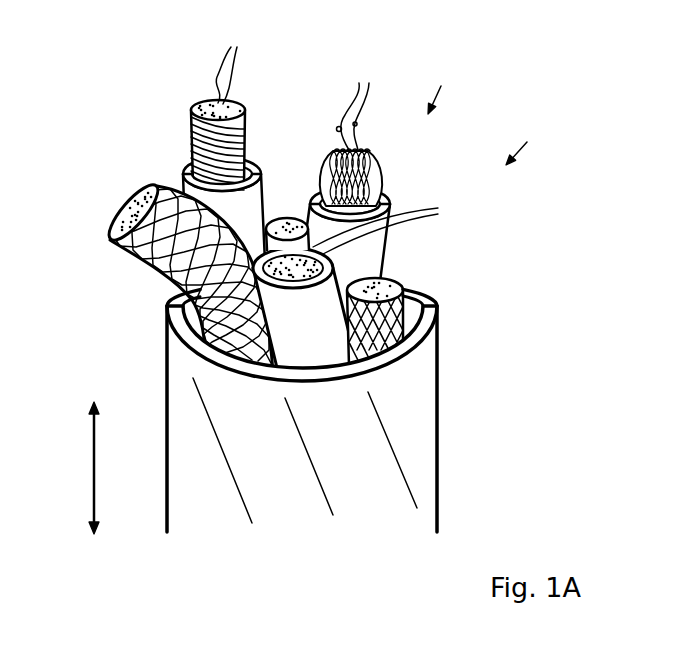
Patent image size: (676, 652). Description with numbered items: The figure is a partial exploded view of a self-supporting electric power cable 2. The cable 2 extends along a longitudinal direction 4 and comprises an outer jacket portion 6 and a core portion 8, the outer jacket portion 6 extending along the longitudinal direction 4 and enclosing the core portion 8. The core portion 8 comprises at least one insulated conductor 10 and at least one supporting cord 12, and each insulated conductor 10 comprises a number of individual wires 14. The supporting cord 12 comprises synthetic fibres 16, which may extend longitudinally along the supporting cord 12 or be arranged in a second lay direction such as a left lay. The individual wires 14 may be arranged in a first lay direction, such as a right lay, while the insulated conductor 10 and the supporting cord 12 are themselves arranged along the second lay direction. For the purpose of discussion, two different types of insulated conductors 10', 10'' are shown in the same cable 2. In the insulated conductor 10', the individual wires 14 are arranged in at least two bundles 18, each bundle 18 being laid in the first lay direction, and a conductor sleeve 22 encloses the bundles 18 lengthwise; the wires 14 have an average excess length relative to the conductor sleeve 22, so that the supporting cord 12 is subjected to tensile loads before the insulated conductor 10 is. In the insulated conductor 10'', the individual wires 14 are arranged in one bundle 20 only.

The self-supporting electric power cable 2 is at (523, 141).
The longitudinal direction 4 is at (93, 476).
The outer jacket portion 6 is at (423, 381).
The core portion 8 is at (439, 86).
The insulated conductor 10 is at (305, 310).
The insulated conductor 10' is at (379, 234).
The insulated conductor 10'' is at (187, 200).
The supporting cord 12 is at (290, 219).
The individual wires 14 is at (335, 139).
The synthetic fibres 16 is at (104, 223).
The bundles 18 is at (380, 170).
The bundle 20 is at (206, 116).
The conductor sleeve 22 is at (187, 167).